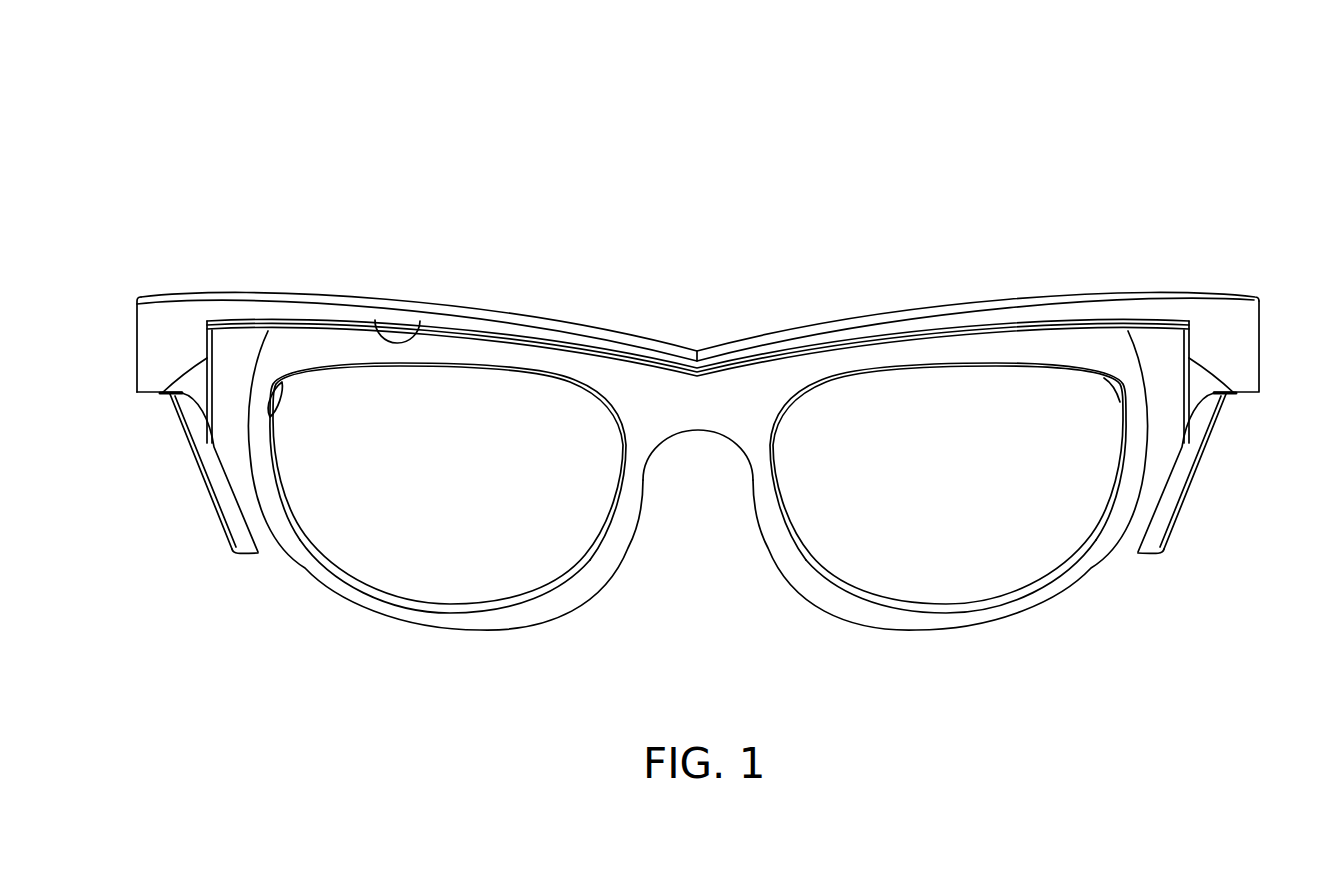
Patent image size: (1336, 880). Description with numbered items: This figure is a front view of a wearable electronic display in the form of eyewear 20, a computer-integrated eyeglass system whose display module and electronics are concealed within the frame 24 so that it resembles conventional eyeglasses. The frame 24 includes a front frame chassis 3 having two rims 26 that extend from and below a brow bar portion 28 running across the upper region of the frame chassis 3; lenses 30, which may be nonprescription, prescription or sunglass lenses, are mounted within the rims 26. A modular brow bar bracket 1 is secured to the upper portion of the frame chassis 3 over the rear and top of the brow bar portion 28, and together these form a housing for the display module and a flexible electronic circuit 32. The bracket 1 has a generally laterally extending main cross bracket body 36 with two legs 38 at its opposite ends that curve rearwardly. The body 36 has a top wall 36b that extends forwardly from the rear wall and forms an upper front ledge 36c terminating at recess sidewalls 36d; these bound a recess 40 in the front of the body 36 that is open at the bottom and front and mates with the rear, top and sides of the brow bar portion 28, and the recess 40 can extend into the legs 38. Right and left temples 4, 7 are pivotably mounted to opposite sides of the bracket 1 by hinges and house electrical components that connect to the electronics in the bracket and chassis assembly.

The modular brow bar bracket 1 is at (147, 322).
The frame chassis 3 is at (383, 356).
The right temple 4 is at (236, 514).
The left temple 7 is at (1168, 514).
The electronic eyewear 20 is at (639, 199).
The frame 24 is at (1102, 592).
The rims 26 is at (516, 614).
The brow bar portion 28 is at (780, 390).
The lenses 30 is at (451, 535).
The flexible electronic circuit 32 is at (342, 321).
The main cross bracket body 36 is at (898, 313).
The top wall 36b is at (698, 343).
The upper front ledge 36c is at (420, 333).
The recess sidewalls 36d is at (162, 393).
The legs 38 is at (137, 368).
The recess 40 is at (1190, 347).